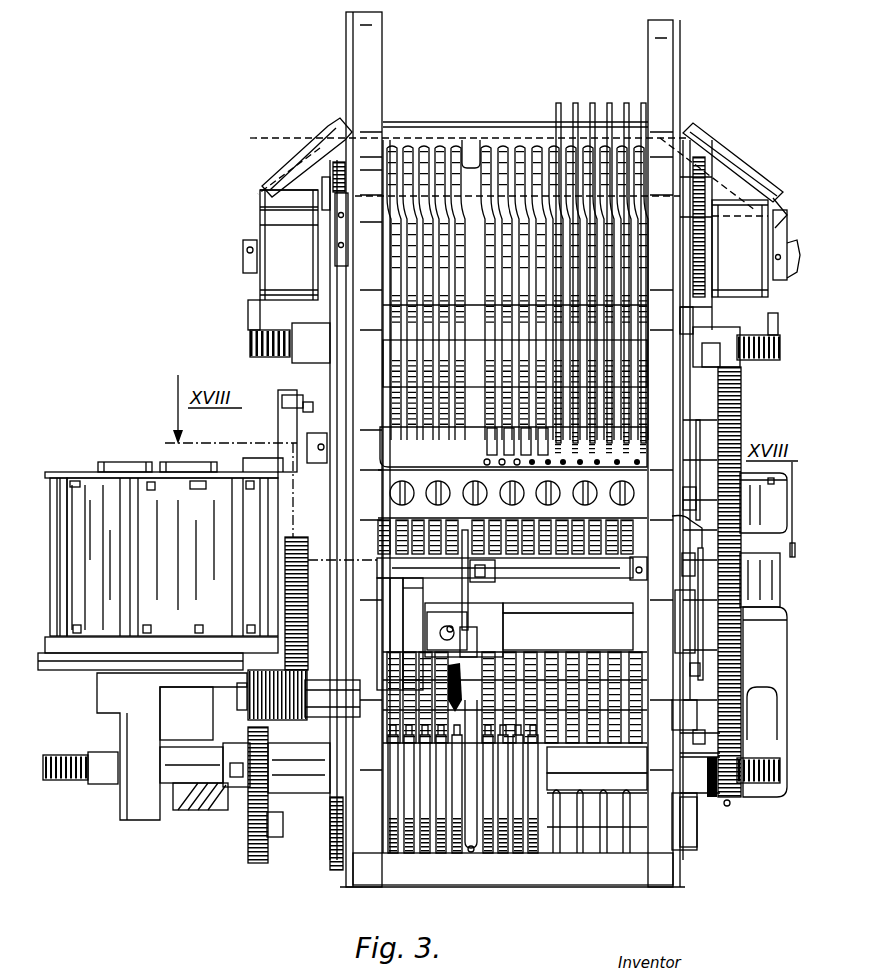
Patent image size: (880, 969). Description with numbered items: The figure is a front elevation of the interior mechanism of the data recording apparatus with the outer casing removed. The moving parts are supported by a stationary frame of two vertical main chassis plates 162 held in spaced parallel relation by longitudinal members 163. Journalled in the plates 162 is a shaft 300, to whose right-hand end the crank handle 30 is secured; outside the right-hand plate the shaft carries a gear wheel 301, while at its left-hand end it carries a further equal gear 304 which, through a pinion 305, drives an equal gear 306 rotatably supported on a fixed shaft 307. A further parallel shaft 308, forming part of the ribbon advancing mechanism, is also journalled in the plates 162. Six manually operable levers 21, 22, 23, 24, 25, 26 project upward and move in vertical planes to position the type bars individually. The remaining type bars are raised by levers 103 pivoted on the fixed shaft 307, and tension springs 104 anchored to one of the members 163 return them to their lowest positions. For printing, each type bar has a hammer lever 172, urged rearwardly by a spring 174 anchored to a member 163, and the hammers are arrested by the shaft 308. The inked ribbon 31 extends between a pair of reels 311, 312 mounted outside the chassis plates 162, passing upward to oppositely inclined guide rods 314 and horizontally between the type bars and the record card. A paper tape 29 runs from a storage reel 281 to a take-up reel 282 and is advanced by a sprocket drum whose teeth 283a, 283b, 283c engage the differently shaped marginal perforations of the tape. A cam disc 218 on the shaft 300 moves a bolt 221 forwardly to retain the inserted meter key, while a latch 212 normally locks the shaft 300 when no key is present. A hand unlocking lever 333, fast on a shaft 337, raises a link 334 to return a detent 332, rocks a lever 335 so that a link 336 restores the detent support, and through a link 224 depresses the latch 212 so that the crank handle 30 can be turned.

The main chassis plates 162 is at (376, 28).
The inclined guide rod 314 is at (332, 137).
The ribbon reel 312 is at (745, 217).
The shaft 308 is at (470, 142).
The manually operable lever 21 is at (556, 110).
The manually operable lever 22 is at (574, 110).
The manually operable lever 23 is at (590, 110).
The manually operable lever 24 is at (608, 110).
The manually operable lever 25 is at (626, 110).
The manually operable lever 26 is at (643, 110).
The inked ribbon 31 is at (273, 178).
The ribbon reel 311 is at (265, 228).
The hammer lever 172 is at (396, 365).
The cam disc 218 is at (424, 590).
The spring 174 is at (420, 520).
The hand unlocking lever 333 is at (666, 550).
The link 224 is at (470, 592).
The bolt 221 is at (455, 627).
The shaft 337 is at (588, 572).
The latch 212 is at (478, 637).
The shaft 300 is at (627, 645).
The detent 332 is at (712, 360).
The link 334 is at (700, 392).
The crank handle 30 is at (746, 652).
The lever 335 is at (695, 738).
The link 336 is at (694, 767).
The gear wheel 301 is at (740, 783).
The gear 306 is at (248, 833).
The fixed shaft 307 is at (560, 778).
The pinion 305 is at (263, 708).
The gear 304 is at (290, 599).
The paper tape 29 is at (103, 488).
The take-up reel 282 is at (77, 475).
The storage reel 281 is at (242, 476).
The teeth 283a is at (196, 490).
The teeth 283b is at (247, 490).
The teeth 283c is at (150, 626).
The tension spring 104 is at (408, 855).
The lever 103 is at (465, 855).
The longitudinal member 163 is at (530, 875).